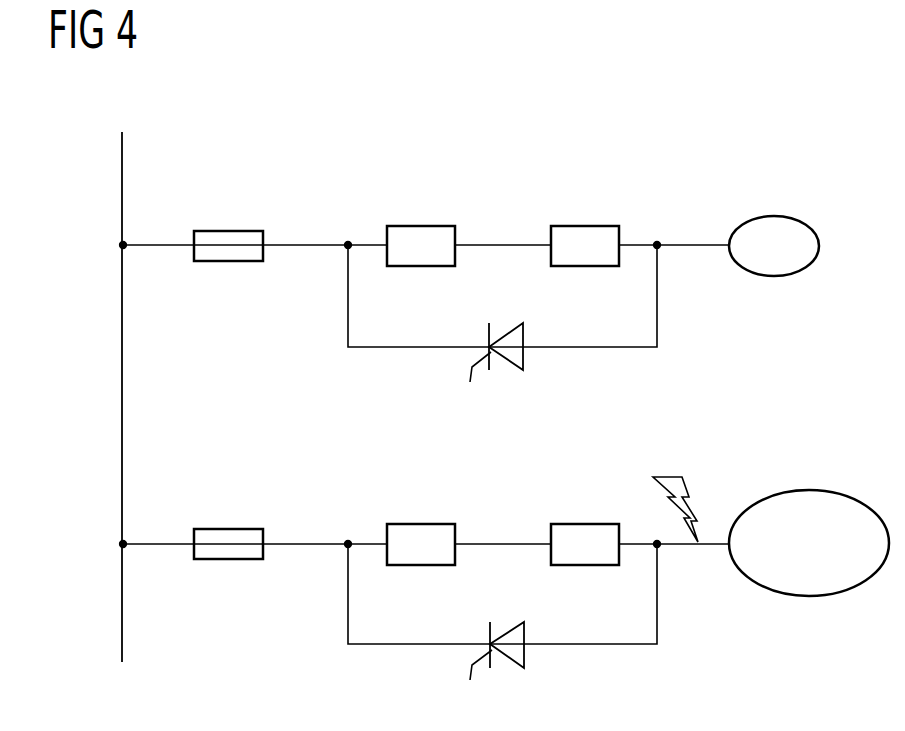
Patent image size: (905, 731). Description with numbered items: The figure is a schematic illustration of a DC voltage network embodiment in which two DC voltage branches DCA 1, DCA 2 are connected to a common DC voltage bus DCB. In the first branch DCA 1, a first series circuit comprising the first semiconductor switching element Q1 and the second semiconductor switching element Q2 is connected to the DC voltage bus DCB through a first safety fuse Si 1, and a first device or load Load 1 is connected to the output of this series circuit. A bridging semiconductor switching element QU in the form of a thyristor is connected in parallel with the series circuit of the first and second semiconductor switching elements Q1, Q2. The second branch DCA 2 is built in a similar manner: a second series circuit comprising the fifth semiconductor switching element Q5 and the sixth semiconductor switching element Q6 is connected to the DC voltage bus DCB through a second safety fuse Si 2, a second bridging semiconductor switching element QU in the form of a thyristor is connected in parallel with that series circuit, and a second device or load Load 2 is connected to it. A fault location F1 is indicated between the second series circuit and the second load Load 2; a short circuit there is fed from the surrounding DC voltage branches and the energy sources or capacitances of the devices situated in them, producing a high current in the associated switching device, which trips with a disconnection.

The DC voltage bus DCB is at (93, 172).
The first DC voltage branch DCA 1 is at (300, 212).
The second DC voltage branch DCA 2 is at (300, 511).
The first safety fuse Si 1 is at (228, 265).
The second safety fuse Si 2 is at (228, 564).
The first semiconductor switching element Q1 is at (421, 226).
The second semiconductor switching element Q2 is at (585, 226).
The fifth semiconductor switching element Q5 is at (421, 525).
The sixth semiconductor switching element Q6 is at (585, 525).
The bridging semiconductor switching element QU is at (505, 516).
The first device or load Load 1 is at (774, 216).
The second device or load Load 2 is at (811, 490).
The fault location F1 is at (685, 496).